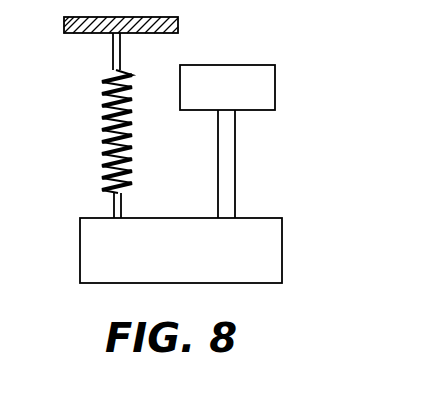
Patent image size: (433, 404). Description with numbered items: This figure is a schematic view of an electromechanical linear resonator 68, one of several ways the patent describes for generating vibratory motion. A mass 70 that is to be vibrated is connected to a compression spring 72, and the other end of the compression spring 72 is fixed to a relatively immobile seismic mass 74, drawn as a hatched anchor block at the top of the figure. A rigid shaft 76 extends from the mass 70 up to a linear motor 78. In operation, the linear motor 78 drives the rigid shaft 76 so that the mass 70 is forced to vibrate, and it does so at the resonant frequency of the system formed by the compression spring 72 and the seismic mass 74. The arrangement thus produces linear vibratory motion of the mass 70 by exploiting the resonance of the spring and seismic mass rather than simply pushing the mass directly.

The electromechanical linear resonator 68 is at (232, 53).
The mass 70 is at (178, 227).
The compression spring 72 is at (107, 142).
The seismic mass 74 is at (92, 34).
The rigid shaft 76 is at (237, 182).
The linear motor 78 is at (275, 94).